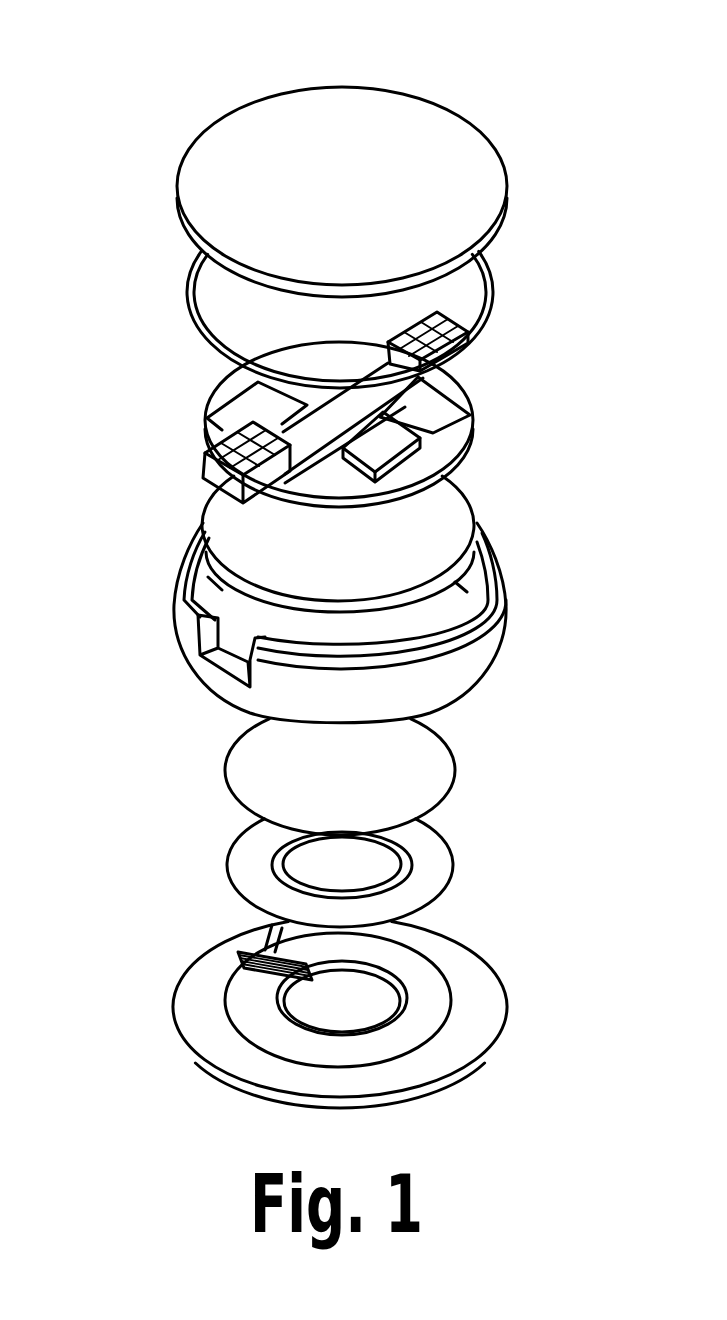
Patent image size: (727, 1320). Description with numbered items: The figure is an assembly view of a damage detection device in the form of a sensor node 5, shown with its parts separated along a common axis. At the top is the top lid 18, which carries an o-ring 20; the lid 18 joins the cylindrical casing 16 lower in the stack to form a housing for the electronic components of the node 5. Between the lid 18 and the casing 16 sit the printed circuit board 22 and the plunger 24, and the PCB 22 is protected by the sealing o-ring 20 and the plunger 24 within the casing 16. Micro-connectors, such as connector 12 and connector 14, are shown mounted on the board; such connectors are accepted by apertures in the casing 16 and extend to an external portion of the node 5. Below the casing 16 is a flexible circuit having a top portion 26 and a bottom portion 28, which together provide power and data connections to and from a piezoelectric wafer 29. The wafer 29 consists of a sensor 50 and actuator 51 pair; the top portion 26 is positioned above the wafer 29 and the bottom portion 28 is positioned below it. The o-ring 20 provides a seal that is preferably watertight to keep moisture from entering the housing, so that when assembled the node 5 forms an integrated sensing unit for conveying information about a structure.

The sensor node 5 is at (240, 50).
The connector 12 is at (203, 472).
The connector 14 is at (482, 352).
The casing 16 is at (500, 618).
The top lid 18 is at (481, 150).
The o-ring 20 is at (497, 267).
The printed circuit board 22 is at (243, 380).
The plunger 24 is at (463, 510).
The top portion of flexible circuit 26 is at (444, 760).
The bottom portion of flexible circuit 28 is at (491, 997).
The piezoelectric wafer 29 is at (238, 860).
The sensor 50 is at (305, 872).
The actuator 51 is at (476, 866).